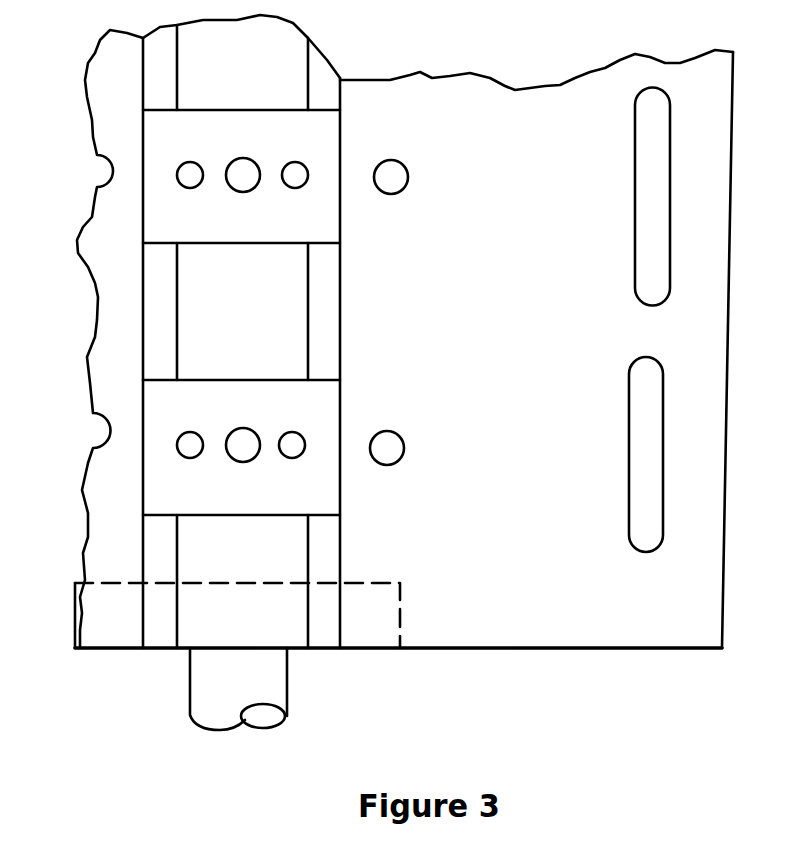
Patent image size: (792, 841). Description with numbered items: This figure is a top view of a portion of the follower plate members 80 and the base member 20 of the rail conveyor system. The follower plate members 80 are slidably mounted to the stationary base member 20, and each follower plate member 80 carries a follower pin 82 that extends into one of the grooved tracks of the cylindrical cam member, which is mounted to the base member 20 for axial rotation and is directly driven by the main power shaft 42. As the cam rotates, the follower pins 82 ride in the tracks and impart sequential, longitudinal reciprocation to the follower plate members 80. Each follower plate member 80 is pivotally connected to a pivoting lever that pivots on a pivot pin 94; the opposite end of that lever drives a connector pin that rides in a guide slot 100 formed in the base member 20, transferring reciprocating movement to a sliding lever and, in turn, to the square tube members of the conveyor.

The base member 20 is at (118, 648).
The main power shaft 42 is at (288, 687).
The follower plate member 80 is at (338, 213).
The follower pin 82 is at (243, 173).
The pivot pin 94 is at (408, 165).
The guide slot 100 is at (646, 285).